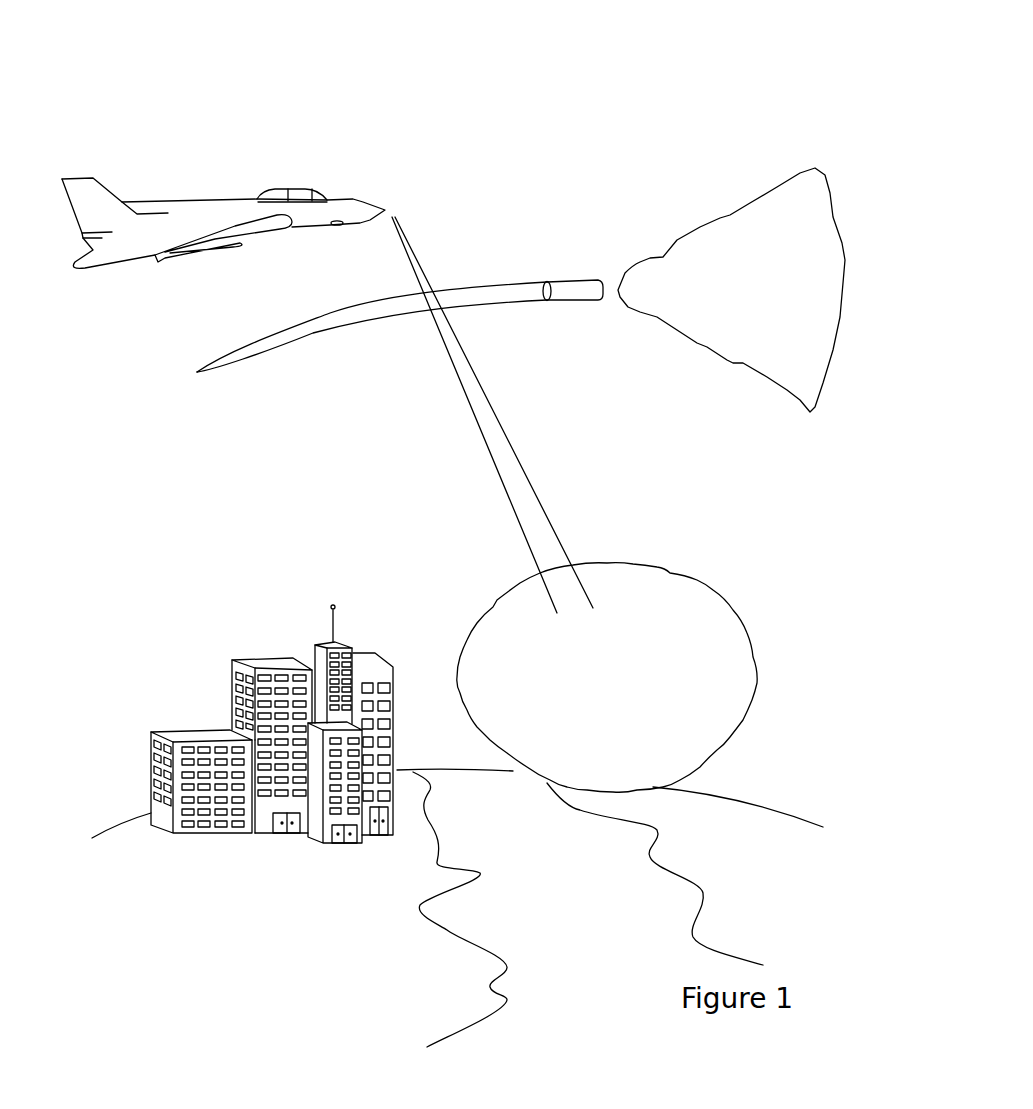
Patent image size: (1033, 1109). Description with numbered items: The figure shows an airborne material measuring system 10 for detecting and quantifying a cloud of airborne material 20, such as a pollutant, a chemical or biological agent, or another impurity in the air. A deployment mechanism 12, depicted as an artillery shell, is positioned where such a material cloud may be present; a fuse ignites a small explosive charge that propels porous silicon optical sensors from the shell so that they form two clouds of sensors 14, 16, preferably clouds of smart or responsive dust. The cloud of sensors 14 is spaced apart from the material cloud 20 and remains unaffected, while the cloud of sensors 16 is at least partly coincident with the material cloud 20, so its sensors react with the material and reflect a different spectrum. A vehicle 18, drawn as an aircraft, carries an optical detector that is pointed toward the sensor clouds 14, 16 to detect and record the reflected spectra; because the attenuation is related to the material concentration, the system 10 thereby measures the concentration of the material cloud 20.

The system 10 is at (819, 121).
The deployment mechanism 12 is at (578, 282).
The cloud of sensors 14 is at (659, 203).
The cloud of sensors 16 is at (484, 720).
The vehicle 18 is at (216, 204).
The cloud of airborne material 20 is at (497, 600).